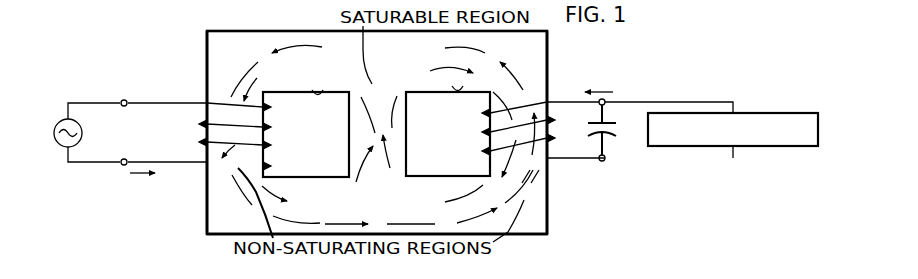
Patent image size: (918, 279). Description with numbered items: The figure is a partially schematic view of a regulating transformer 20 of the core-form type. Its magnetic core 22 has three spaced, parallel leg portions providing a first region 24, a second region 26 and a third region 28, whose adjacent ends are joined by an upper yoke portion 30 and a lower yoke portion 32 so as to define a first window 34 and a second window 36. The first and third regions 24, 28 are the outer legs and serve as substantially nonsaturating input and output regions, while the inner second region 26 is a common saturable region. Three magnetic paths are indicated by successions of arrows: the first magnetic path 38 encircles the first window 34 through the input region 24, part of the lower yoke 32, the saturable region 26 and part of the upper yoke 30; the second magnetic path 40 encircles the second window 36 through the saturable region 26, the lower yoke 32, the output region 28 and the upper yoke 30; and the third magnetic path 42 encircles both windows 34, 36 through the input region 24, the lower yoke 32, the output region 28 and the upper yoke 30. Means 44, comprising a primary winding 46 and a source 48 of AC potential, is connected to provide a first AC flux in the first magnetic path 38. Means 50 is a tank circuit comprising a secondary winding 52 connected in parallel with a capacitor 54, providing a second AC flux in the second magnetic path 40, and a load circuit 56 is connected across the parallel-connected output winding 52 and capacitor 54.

The regulating transformer 20 is at (584, 57).
The magnetic core 22 is at (584, 220).
The first region 24 is at (265, 165).
The second region 26 is at (407, 134).
The third region 28 is at (548, 172).
The upper yoke portion 30 is at (351, 83).
The lower yoke portion 32 is at (415, 193).
The first window 34 is at (308, 87).
The second window 36 is at (446, 80).
The first magnetic path 38 is at (312, 203).
The second magnetic path 40 is at (404, 87).
The third magnetic path 42 is at (248, 193).
The means for providing a first AC flux 44 is at (154, 139).
The primary winding 46 is at (266, 130).
The source of AC potential 48 is at (60, 119).
The means for providing a second AC flux 50 is at (582, 124).
The secondary winding 52 is at (485, 114).
The capacitor 54 is at (612, 137).
The load circuit 56 is at (767, 112).